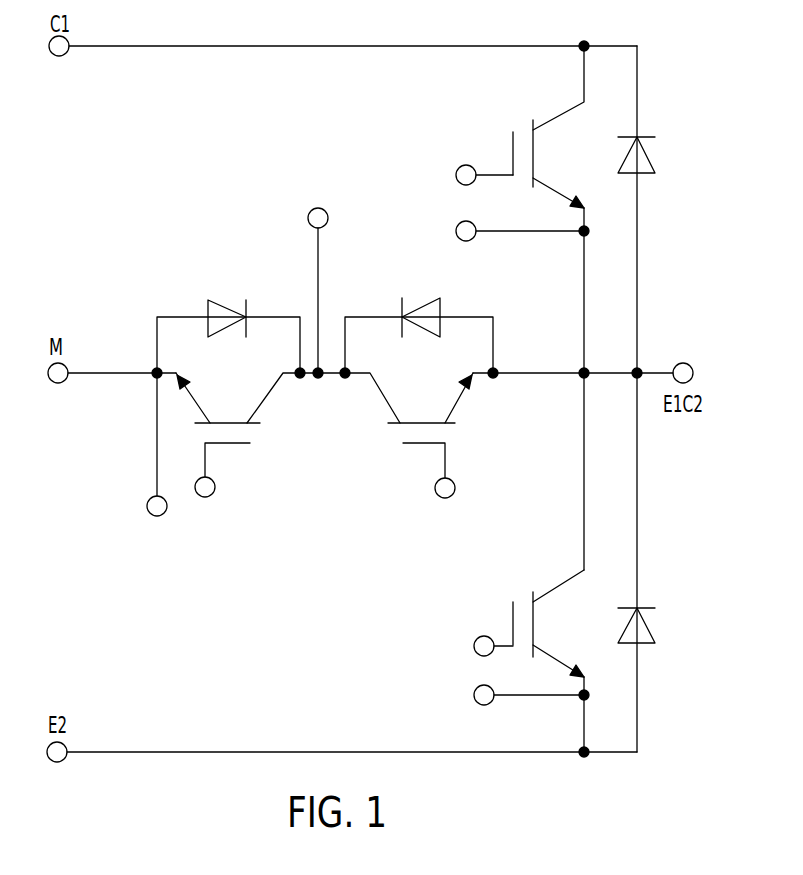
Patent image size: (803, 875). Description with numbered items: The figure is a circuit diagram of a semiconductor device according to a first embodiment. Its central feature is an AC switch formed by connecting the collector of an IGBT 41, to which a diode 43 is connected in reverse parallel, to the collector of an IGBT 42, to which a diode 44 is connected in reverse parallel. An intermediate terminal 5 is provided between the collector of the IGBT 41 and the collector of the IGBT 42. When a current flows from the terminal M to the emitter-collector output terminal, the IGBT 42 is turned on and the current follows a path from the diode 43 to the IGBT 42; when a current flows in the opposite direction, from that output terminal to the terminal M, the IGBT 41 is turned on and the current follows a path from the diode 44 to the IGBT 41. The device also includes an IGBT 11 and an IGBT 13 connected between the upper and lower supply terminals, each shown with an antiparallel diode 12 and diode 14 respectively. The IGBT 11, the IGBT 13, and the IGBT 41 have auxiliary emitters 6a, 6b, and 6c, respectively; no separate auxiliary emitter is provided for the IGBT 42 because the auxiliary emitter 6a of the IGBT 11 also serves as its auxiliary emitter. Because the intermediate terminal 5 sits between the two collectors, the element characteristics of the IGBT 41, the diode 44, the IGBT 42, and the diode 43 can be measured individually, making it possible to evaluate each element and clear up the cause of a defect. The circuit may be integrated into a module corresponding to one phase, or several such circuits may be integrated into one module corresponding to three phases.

The intermediate terminal 5 is at (313, 209).
The auxiliary emitter 6a is at (456, 229).
The auxiliary emitter 6b is at (474, 699).
The auxiliary emitter 6c is at (147, 510).
The IGBT 11 is at (513, 151).
The upper arm freewheeling diode 12 is at (655, 163).
The IGBT 13 is at (513, 625).
The lower arm freewheeling diode 14 is at (655, 633).
The IGBT 41 is at (236, 443).
The IGBT 42 is at (420, 443).
The diode 43 is at (222, 302).
The diode 44 is at (425, 303).